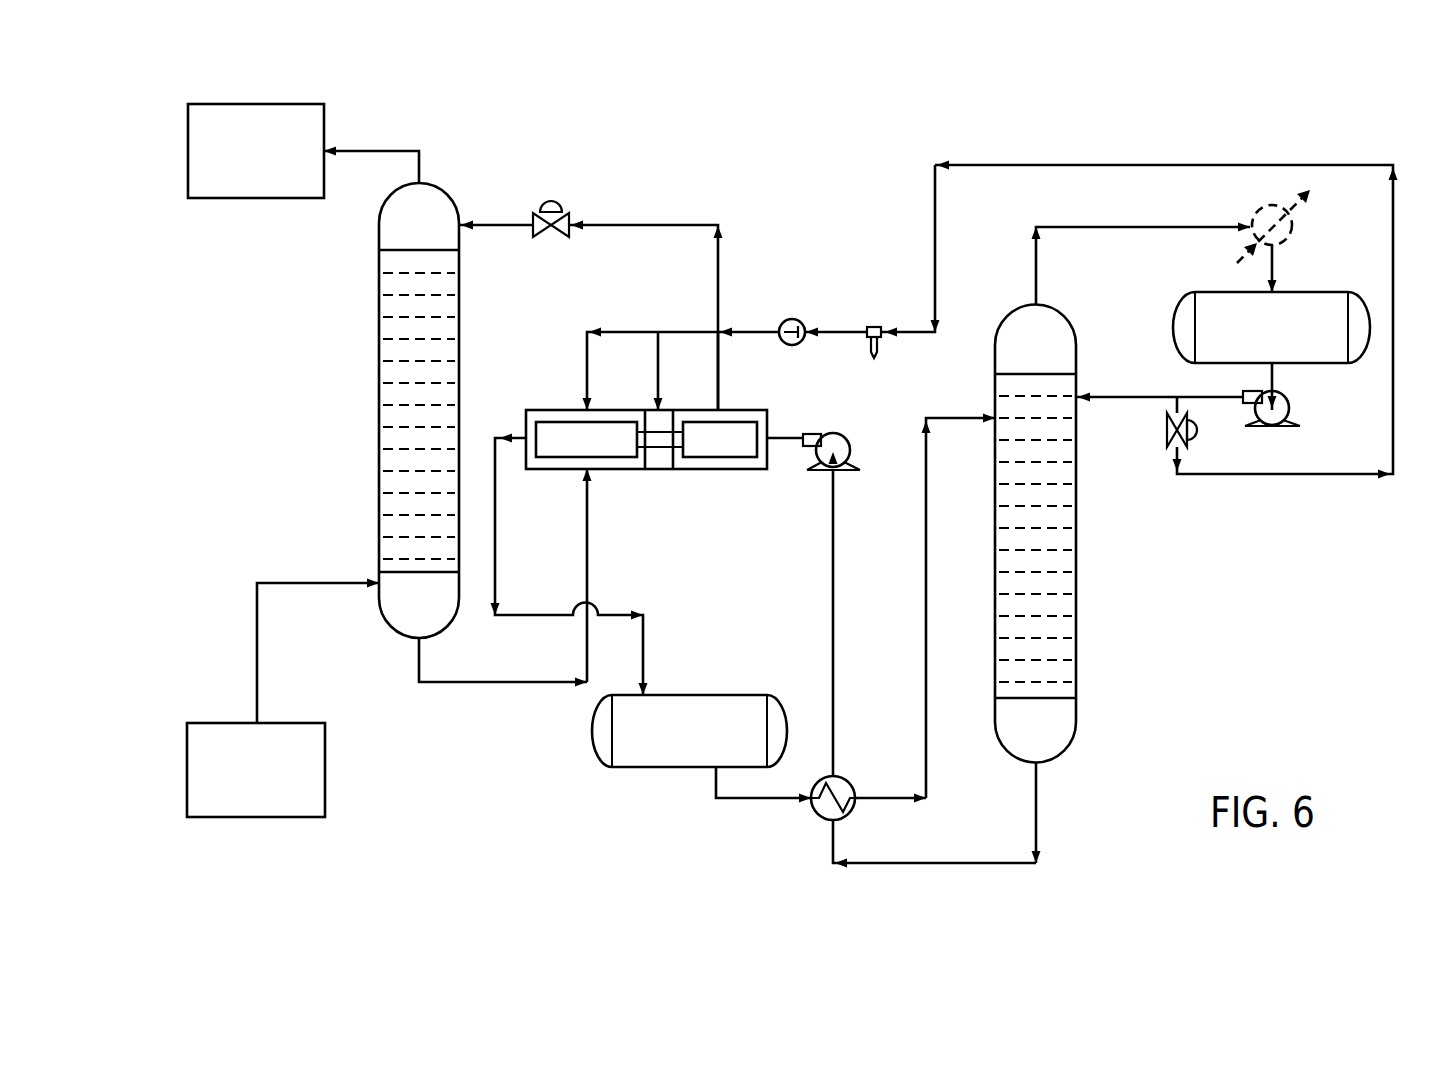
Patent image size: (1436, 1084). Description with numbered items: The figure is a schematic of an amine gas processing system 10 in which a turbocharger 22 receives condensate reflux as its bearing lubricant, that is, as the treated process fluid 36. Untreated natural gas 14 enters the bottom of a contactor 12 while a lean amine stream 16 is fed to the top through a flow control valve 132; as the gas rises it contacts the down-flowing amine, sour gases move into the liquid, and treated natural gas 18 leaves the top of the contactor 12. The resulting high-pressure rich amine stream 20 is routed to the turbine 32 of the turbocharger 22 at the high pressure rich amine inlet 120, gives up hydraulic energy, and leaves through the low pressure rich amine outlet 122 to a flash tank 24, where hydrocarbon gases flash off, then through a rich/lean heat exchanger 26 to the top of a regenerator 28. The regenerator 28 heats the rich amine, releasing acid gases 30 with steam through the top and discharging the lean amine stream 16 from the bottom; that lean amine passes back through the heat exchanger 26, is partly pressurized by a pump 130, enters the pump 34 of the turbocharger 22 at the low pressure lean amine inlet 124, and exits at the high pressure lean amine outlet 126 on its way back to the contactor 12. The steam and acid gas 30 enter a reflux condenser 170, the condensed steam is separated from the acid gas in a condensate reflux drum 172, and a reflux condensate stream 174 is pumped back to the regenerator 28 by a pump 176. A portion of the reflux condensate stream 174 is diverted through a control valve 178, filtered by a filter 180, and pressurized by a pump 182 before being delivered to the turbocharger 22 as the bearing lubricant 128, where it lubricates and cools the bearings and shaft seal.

The gas processing system 10 is at (1352, 120).
The contactor 12 is at (379, 383).
The untreated natural gas 14 is at (258, 818).
The lean amine stream 16 is at (1036, 800).
The treated natural gas 18 is at (258, 200).
The rich amine stream 20 is at (957, 418).
The turbocharger 22 is at (552, 410).
The flash tank 24 is at (690, 695).
The rich/lean heat exchanger 26 is at (812, 812).
The regenerator 28 is at (1077, 590).
The acid gases 30 is at (1036, 275).
The turbine 32 is at (610, 458).
The pump 34 is at (730, 458).
The treated process fluid stream 36 is at (706, 332).
The high pressure rich amine inlet 120 is at (616, 575).
The low pressure rich amine outlet 122 is at (495, 512).
The low pressure lean amine inlet 124 is at (787, 436).
The high pressure lean amine outlet 126 is at (720, 398).
The bearing lubricant 128 is at (630, 332).
The pump 130 is at (835, 435).
The flow control valve 132 is at (555, 201).
The reflux condenser 170 is at (1258, 210).
The condensate reflux drum 172 is at (1310, 292).
The reflux condensate stream 174 is at (1165, 397).
The pump 176 is at (1272, 426).
The control valve 178 is at (1170, 432).
The filter 180 is at (874, 325).
The pump 182 is at (786, 320).